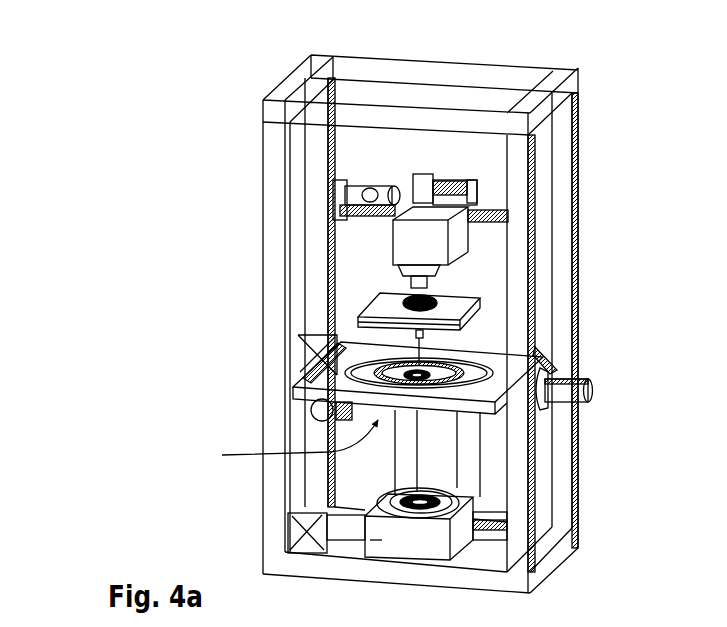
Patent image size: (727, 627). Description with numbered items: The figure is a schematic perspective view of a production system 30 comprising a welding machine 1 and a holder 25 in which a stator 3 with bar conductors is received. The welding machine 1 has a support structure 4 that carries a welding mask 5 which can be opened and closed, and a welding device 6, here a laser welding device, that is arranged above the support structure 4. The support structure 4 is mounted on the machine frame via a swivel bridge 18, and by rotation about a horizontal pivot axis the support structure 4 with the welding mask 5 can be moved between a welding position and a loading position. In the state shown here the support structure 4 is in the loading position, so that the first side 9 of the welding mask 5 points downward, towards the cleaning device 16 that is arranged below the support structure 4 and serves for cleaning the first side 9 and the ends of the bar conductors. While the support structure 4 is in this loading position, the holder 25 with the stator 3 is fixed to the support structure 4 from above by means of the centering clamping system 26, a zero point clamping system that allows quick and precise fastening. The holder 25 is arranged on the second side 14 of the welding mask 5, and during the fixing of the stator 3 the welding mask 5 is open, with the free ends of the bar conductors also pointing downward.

The welding machine 1 is at (198, 224).
The production system 30 is at (128, 108).
The stator 3 is at (395, 302).
The support structure 4 is at (515, 402).
The welding mask 5 is at (415, 350).
The welding device 6 is at (488, 235).
The first side 9 is at (290, 444).
The second side 14 is at (370, 352).
The cleaning device 16 is at (300, 515).
The swivel bridge 18 is at (325, 376).
The holder 25 is at (462, 306).
The centering clamping system 26 is at (555, 358).